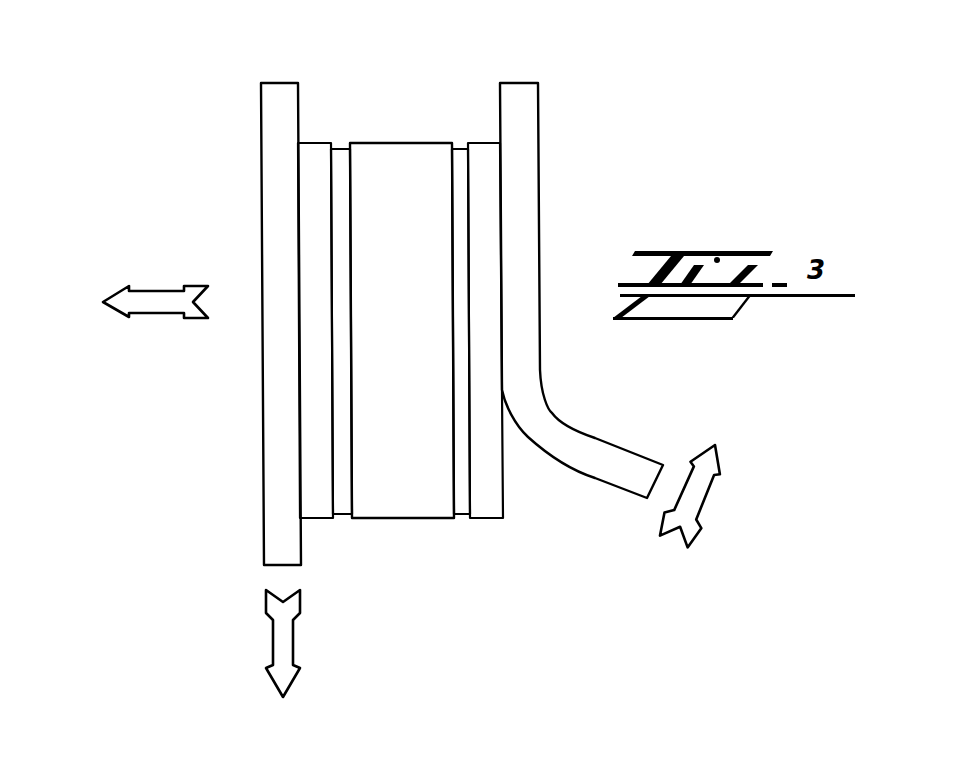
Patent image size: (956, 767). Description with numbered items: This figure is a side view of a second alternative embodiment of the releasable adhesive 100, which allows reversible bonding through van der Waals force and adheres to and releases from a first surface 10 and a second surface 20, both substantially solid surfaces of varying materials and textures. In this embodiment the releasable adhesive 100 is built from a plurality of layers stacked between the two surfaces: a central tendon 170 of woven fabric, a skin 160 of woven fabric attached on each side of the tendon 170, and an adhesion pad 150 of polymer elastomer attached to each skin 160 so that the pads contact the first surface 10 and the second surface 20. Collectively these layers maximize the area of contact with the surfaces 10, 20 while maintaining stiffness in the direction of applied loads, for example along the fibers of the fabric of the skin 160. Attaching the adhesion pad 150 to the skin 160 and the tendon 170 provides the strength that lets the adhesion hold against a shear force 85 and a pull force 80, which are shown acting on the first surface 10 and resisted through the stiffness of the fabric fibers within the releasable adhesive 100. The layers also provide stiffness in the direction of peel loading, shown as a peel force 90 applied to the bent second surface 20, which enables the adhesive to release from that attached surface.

The first surface 10 is at (262, 170).
The second surface 20 is at (539, 168).
The pull force 80 is at (158, 293).
The shear force 85 is at (273, 628).
The peel force 90 is at (707, 502).
The releasable adhesive 100 is at (408, 50).
The adhesion pad 150 is at (318, 518).
The skin 160 is at (345, 517).
The tendon 170 is at (407, 427).